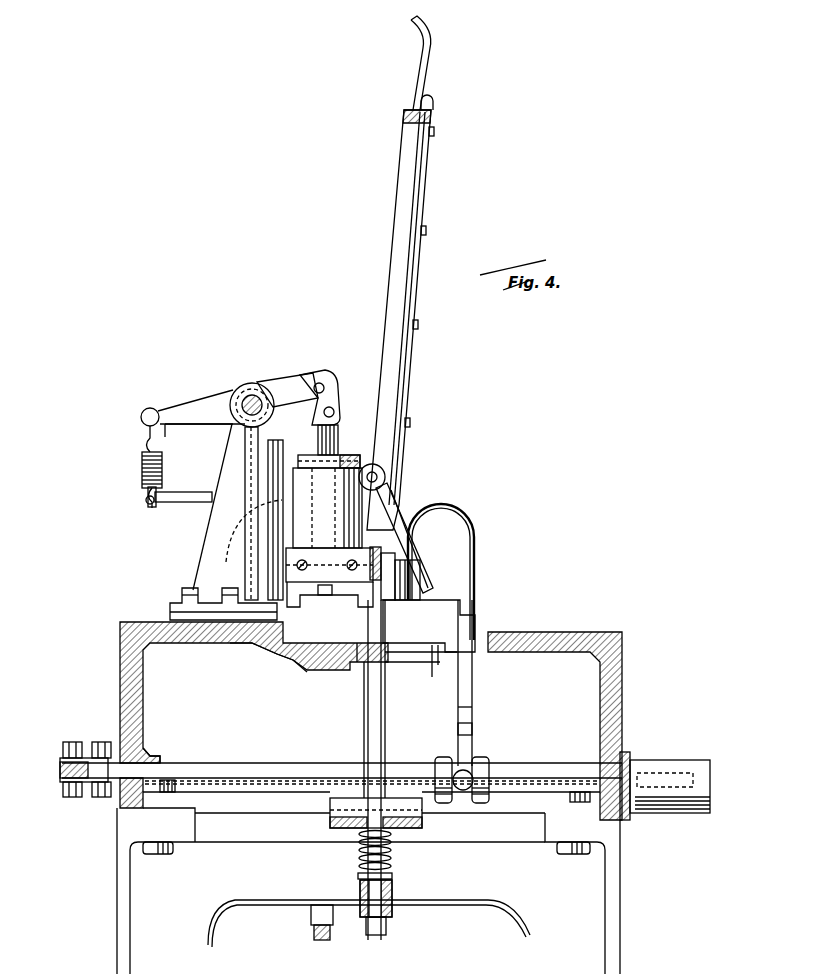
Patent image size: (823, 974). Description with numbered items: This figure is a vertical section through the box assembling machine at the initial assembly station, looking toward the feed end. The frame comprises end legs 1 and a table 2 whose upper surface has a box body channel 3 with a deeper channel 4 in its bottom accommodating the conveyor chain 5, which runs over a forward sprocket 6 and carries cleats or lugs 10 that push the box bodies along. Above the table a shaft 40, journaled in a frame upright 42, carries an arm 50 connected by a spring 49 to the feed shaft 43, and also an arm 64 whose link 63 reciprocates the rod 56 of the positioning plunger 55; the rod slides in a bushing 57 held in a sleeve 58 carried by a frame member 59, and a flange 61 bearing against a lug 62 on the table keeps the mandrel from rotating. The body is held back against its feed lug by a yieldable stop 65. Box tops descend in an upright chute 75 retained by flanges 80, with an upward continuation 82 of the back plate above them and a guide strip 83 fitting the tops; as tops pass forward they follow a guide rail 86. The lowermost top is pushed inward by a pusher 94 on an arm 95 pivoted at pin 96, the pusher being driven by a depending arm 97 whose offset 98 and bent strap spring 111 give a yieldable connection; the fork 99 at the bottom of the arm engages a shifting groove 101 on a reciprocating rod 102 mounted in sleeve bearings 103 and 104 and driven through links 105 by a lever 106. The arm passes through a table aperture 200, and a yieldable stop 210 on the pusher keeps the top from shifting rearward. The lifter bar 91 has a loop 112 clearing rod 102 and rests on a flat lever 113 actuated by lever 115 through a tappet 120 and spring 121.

The end pedestals or legs 1 is at (117, 878).
The table 2 is at (561, 630).
The box body channel 3 is at (250, 645).
The channel 4 is at (288, 660).
The conveyor chain 5 is at (304, 672).
The forward sprocket 6 is at (310, 915).
The cleats or lugs 10 is at (272, 653).
The shaft 40 is at (252, 396).
The frame upright 42 is at (224, 452).
The shaft 43 is at (186, 493).
The spring 49 is at (142, 465).
The arm 50 is at (183, 408).
The positioning mandrel or plunger 55 is at (300, 548).
The rod 56 is at (333, 428).
The bushing 57 is at (326, 460).
The sleeve 58 is at (298, 478).
The frame member 59 is at (275, 498).
The flange 61 is at (275, 578).
The lug 62 is at (277, 592).
The link 63 is at (331, 396).
The arm 64 is at (288, 381).
The yieldable stop 65 is at (362, 665).
The upright chute 75 is at (416, 198).
The plates 80 is at (412, 282).
The upward continuation 82 is at (417, 55).
The guide strip 83 is at (434, 107).
The flange or guide rail 86 is at (375, 552).
The bar 91 is at (366, 703).
The pusher 94 is at (396, 561).
The arm 95 is at (402, 508).
The pivot pin 96 is at (380, 473).
The depending arm 97 is at (474, 682).
The upper horizontal offset 98 is at (440, 600).
The fork 99 is at (466, 758).
The shifting groove 101 is at (490, 760).
The reciprocating rod 102 is at (530, 772).
The sleeve bearing 103 is at (663, 762).
The sleeve bearing 104 is at (160, 756).
The links 105 is at (85, 744).
The lever 106 is at (60, 764).
The bent strap spring 111 is at (472, 532).
The loop 112 is at (366, 752).
The flat lever 113 is at (410, 830).
The lever 115 is at (393, 896).
The tappet 120 is at (358, 853).
The spring 121 is at (358, 875).
The table aperture 200 is at (436, 672).
The yieldable stop 210 is at (430, 655).